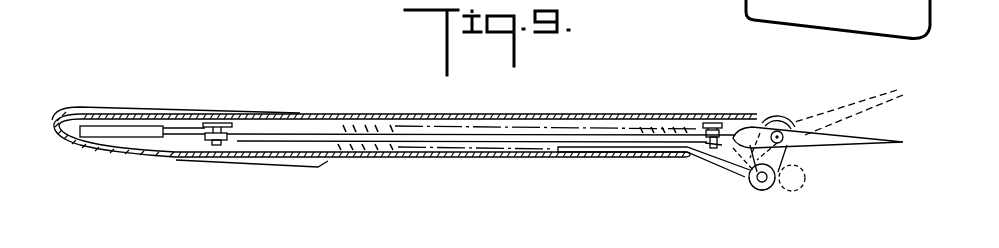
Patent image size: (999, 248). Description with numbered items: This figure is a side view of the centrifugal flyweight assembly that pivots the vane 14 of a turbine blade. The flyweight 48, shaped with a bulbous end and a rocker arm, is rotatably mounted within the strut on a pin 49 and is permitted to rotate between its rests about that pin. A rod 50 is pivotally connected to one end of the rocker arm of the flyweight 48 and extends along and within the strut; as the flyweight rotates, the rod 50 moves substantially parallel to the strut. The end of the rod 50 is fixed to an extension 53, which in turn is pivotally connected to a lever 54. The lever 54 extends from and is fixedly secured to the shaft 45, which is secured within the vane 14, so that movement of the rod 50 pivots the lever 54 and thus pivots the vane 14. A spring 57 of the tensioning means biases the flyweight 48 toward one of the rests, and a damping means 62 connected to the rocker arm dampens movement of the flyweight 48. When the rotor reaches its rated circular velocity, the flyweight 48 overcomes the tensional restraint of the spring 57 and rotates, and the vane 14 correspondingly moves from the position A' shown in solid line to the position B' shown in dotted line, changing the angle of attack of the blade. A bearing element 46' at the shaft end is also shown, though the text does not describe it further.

The vane 14 is at (877, 132).
The shaft 45 is at (780, 135).
The bearing ring 46' is at (761, 99).
The flyweight 48 is at (108, 128).
The pin 49 is at (208, 122).
The rod 50 is at (333, 138).
The extension 53 is at (692, 160).
The lever 54 is at (780, 158).
The spring 57 is at (370, 132).
The damping means 62 is at (713, 152).
The position A' is at (929, 158).
The position B' is at (877, 97).